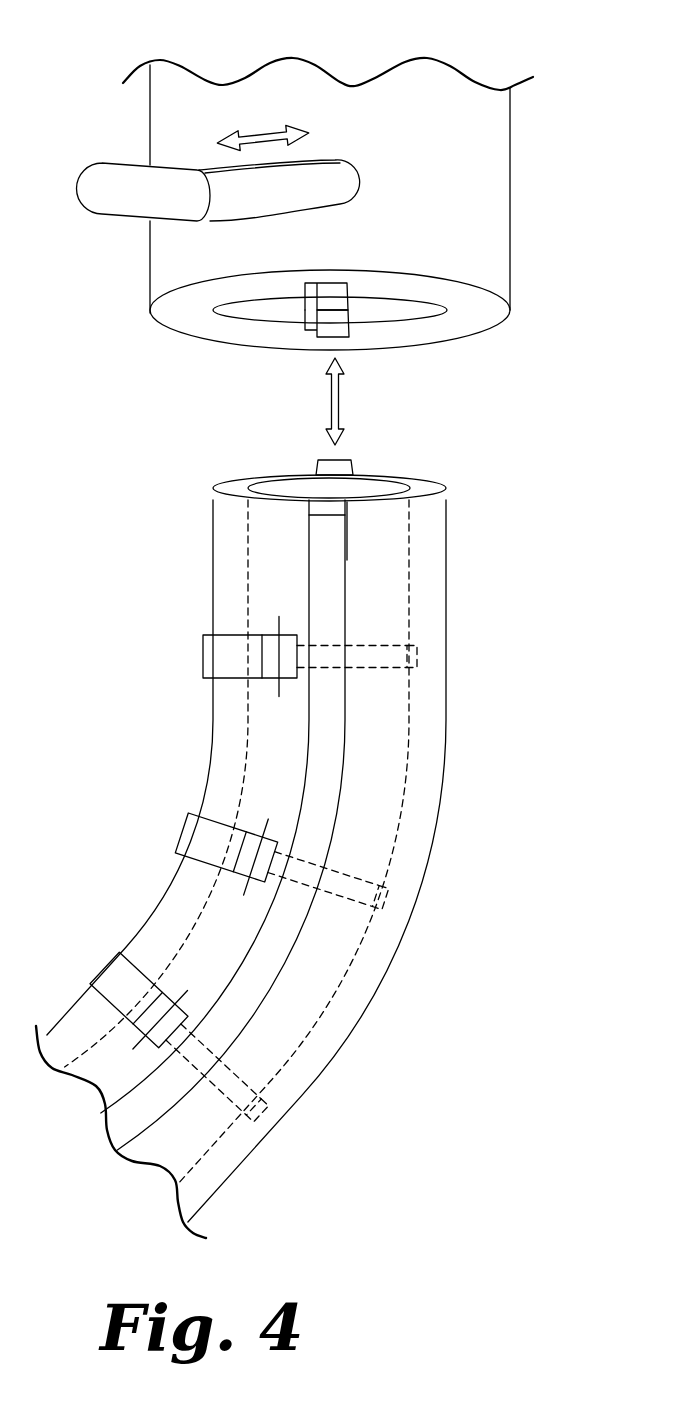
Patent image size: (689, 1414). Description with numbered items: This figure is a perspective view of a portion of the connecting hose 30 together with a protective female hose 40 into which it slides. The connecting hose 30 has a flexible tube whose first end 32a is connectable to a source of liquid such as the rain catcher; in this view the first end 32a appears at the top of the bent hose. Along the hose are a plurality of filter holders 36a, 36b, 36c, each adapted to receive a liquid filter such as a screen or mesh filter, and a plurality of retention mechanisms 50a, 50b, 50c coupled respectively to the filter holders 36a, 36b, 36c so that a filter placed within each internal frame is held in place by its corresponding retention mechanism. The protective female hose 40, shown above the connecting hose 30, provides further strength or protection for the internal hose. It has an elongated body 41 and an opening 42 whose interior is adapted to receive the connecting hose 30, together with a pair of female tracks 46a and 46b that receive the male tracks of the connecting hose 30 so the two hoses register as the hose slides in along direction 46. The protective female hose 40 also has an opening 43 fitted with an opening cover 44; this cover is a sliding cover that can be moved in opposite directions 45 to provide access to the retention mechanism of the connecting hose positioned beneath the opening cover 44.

The connecting hose 30 is at (118, 547).
The first end 32a is at (393, 473).
The filter holder 36a is at (417, 656).
The filter holder 36b is at (388, 896).
The filter holder 36c is at (262, 1112).
The protective female hose 40 is at (86, 111).
The elongated body 41 is at (180, 252).
The opening 42 is at (260, 310).
The opening 43 is at (326, 185).
The opening cover 44 is at (110, 192).
The opposite directions 45 is at (263, 127).
The vertical movement direction 46 is at (327, 400).
The female track 46a is at (328, 283).
The female track 46b is at (343, 345).
The retention mechanism 50a is at (170, 658).
The retention mechanism 50b is at (150, 817).
The retention mechanism 50c is at (80, 949).